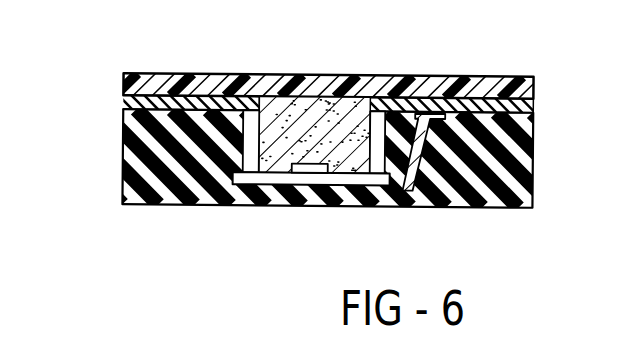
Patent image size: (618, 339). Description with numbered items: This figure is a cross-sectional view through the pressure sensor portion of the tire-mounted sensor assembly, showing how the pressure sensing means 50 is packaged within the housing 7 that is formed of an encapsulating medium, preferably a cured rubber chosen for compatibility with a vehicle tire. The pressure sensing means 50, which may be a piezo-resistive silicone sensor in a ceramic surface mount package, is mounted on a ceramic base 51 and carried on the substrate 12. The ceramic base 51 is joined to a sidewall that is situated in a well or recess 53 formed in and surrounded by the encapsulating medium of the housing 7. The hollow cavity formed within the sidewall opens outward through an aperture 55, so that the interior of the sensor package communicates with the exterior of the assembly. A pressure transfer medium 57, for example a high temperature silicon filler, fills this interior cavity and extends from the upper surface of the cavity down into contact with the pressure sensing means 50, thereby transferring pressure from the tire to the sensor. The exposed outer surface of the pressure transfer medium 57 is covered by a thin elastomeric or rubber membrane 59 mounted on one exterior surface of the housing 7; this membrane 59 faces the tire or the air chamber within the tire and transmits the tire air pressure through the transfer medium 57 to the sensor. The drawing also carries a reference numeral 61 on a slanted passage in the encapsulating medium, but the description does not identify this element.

The housing 7 is at (137, 142).
The substrate 12 is at (149, 110).
The pressure sensing means 50 is at (299, 163).
The ceramic base 51 is at (302, 180).
The well or recess 53 is at (384, 158).
The aperture 55 is at (370, 110).
The pressure transfer medium 57 is at (253, 158).
The elastomeric membrane 59 is at (467, 92).
The via hole 61 is at (416, 166).